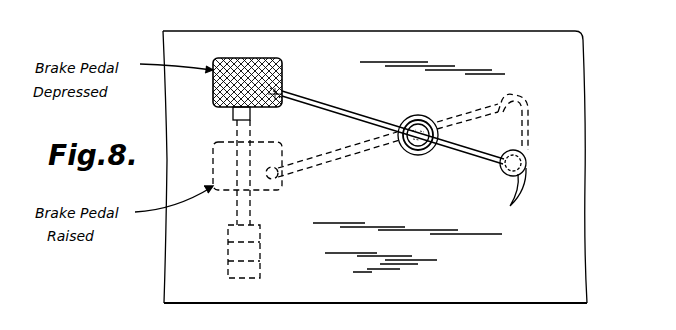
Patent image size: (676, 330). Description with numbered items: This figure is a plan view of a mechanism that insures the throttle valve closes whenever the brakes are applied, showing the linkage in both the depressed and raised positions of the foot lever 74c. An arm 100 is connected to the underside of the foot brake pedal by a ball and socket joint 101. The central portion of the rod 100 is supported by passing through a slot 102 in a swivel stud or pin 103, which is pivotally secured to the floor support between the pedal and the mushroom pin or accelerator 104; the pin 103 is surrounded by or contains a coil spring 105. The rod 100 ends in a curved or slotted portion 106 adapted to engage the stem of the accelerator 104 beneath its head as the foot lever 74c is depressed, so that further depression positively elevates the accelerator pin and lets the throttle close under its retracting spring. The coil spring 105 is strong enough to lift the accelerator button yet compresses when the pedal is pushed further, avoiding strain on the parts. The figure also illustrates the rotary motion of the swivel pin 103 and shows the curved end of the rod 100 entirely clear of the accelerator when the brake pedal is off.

The foot lever 74c is at (279, 168).
The arm 100 is at (375, 123).
The ball and socket joint 101 is at (284, 92).
The slot 102 is at (465, 113).
The stud or pin 103 is at (418, 147).
The mushroom pin or accelerator 104 is at (510, 177).
The coil spring 105 is at (403, 150).
The curved or slotted portion 106 is at (525, 155).